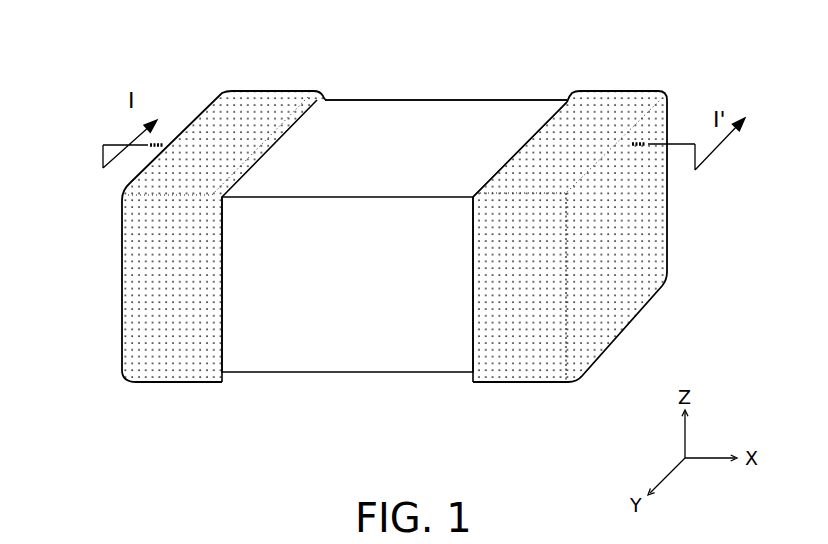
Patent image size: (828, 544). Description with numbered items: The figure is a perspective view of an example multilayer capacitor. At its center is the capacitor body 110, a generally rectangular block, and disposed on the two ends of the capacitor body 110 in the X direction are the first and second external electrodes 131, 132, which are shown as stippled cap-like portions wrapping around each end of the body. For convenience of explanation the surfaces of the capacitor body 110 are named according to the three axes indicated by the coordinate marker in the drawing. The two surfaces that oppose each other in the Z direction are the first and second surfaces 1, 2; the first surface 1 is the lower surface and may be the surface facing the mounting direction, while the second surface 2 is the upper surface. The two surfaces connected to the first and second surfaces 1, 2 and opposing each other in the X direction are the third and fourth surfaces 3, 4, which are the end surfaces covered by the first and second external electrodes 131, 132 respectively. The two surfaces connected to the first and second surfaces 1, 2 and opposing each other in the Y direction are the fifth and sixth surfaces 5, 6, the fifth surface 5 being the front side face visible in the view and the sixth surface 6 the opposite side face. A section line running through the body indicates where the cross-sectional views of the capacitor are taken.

The first surface 1 is at (444, 341).
The second surface 2 is at (382, 142).
The third surface 3 is at (157, 306).
The fourth surface 4 is at (632, 235).
The fifth surface 5 is at (385, 300).
The sixth surface 6 is at (474, 138).
The capacitor body 110 is at (437, 103).
The first external electrode 131 is at (262, 92).
The second external electrode 132 is at (616, 92).